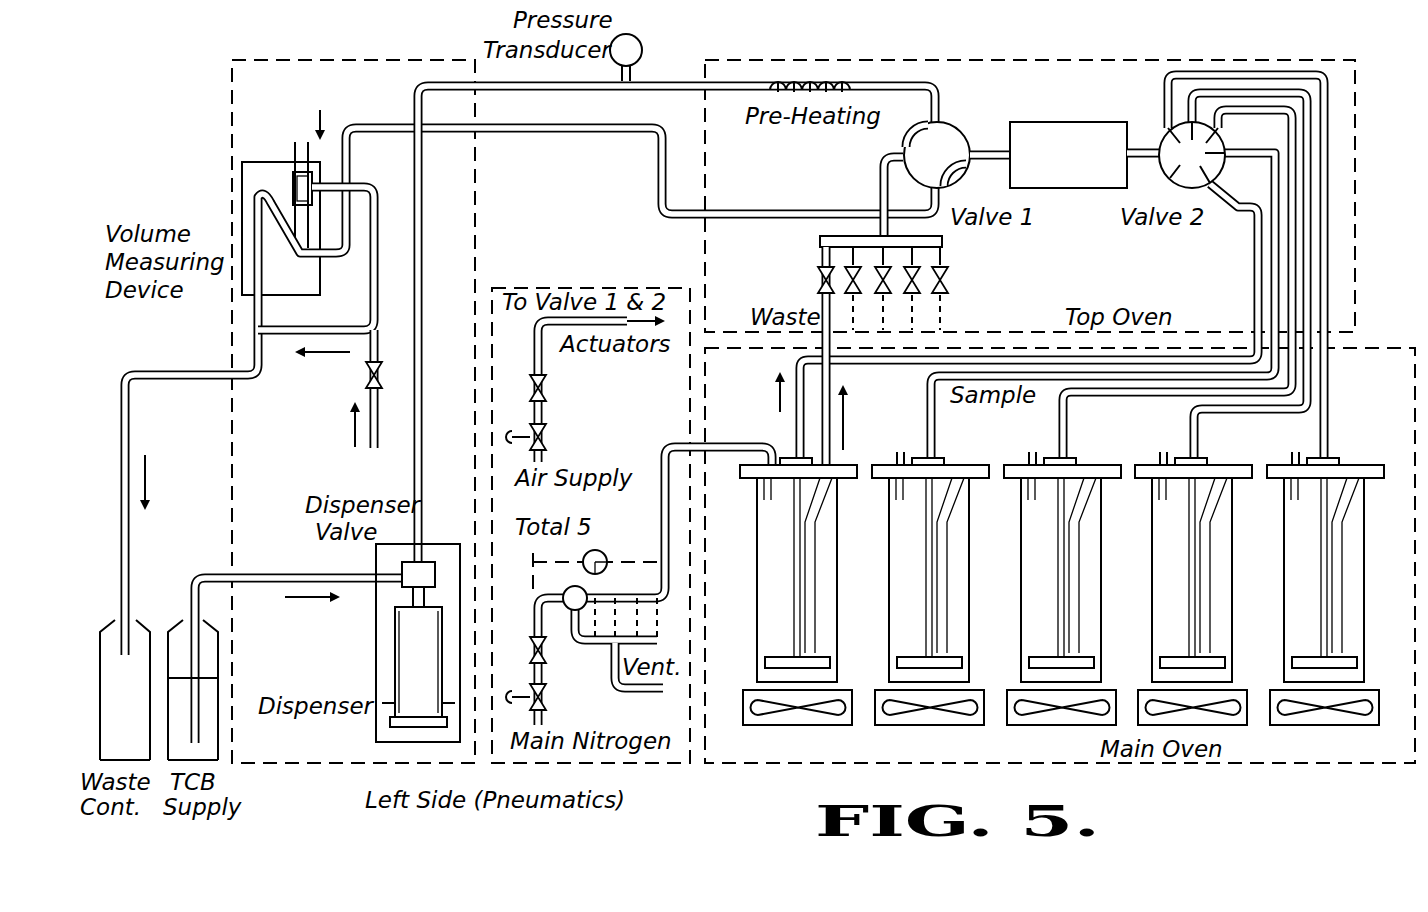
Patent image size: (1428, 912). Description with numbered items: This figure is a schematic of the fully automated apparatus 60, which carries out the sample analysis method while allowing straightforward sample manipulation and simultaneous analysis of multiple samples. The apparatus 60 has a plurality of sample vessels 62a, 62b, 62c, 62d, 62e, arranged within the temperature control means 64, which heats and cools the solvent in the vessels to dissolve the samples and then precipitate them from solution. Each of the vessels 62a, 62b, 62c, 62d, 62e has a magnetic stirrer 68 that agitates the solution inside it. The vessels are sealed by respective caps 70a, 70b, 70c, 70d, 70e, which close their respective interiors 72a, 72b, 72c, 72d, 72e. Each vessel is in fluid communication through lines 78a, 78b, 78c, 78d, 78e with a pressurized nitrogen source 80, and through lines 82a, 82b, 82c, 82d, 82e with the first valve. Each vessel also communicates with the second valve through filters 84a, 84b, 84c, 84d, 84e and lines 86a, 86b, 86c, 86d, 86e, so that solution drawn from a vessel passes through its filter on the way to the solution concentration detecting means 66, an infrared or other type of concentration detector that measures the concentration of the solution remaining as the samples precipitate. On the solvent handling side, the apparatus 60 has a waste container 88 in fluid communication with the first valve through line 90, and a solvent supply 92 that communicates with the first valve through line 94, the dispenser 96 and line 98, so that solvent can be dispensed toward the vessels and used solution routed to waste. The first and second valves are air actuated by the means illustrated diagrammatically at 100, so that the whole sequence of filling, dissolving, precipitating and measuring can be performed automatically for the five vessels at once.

The apparatus 60 is at (800, 48).
The sample vessel 62a is at (757, 582).
The sample vessel 62b is at (971, 548).
The sample vessel 62c is at (1103, 548).
The sample vessel 62d is at (1233, 572).
The sample vessel 62e is at (1366, 560).
The temperature control means 64 is at (1206, 770).
The solution concentration detecting means 66 is at (1076, 120).
The magnetic stirrer 68 is at (790, 725).
The cap 70a is at (853, 476).
The cap 70b is at (988, 474).
The cap 70c is at (1120, 474).
The cap 70d is at (1250, 476).
The cap 70e is at (1383, 474).
The vessel interior 72a is at (838, 602).
The vessel interior 72b is at (969, 602).
The vessel interior 72c is at (1101, 602).
The vessel interior 72d is at (1232, 602).
The vessel interior 72e is at (1364, 598).
The line 78a is at (764, 442).
The line 78b is at (897, 458).
The line 78c is at (1031, 458).
The line 78d is at (1161, 458).
The line 78e is at (1292, 462).
The pressurized nitrogen source 80 is at (568, 703).
The line 82a is at (834, 378).
The line 82b is at (948, 457).
The line 82c is at (1078, 457).
The line 82d is at (1210, 457).
The line 82e is at (1338, 457).
The filter 84a is at (770, 660).
The filter 84b is at (900, 660).
The filter 84c is at (1032, 662).
The filter 84d is at (1163, 662).
The filter 84e is at (1355, 662).
The line 86a is at (794, 536).
The line 86b is at (926, 562).
The line 86c is at (1058, 570).
The line 86d is at (1189, 568).
The line 86e is at (1321, 610).
The waste container 88 is at (141, 725).
The line 90 is at (541, 130).
The solvent supply 92 is at (178, 612).
The line 94 is at (278, 578).
The dispenser 96 is at (412, 652).
The line 98 is at (421, 440).
The air actuating means 100 is at (562, 460).